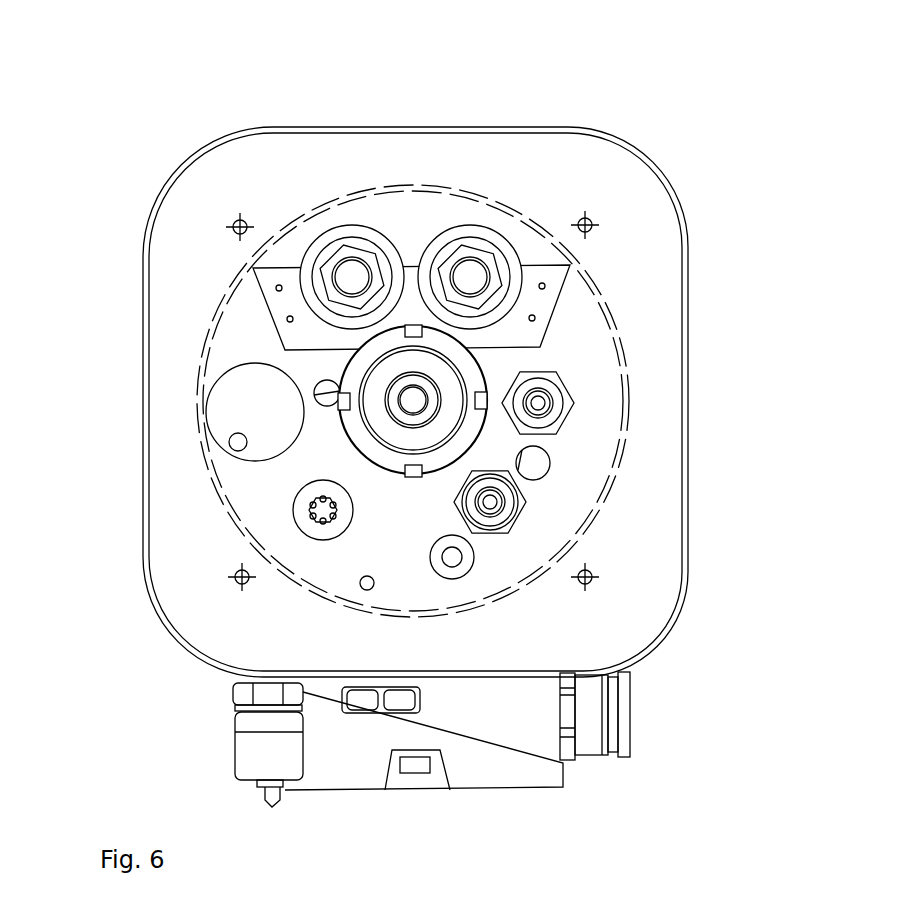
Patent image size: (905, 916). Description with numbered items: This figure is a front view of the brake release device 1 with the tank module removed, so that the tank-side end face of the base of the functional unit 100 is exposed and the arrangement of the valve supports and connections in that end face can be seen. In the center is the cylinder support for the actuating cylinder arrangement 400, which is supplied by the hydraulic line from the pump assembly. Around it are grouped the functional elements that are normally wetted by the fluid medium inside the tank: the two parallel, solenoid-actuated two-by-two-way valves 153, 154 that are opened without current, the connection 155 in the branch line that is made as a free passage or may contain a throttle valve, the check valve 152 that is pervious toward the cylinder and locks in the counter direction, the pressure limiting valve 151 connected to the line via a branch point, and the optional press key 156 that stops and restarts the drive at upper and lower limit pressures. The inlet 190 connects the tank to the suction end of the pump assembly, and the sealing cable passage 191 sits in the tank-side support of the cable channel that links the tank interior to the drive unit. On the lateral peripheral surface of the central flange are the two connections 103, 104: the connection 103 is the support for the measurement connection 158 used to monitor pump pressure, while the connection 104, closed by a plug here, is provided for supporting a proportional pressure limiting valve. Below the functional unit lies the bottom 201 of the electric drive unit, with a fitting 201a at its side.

The brake release device 1 is at (145, 133).
The functional unit 100 is at (147, 230).
The 2/2-way valve 154 is at (320, 237).
The 2/2-way valve 153 is at (443, 235).
The actuating cylinder arrangement 400 is at (502, 369).
The connection 155 is at (570, 397).
The press key 156 is at (220, 408).
The inlet 190 is at (547, 462).
The check valve 152 is at (297, 512).
The pressure limiting valve 151 is at (523, 512).
The sealing cable passage 191 is at (465, 568).
The measurement connection 158 is at (184, 745).
The connection 103 is at (245, 752).
The connection 104 is at (360, 705).
The bottom 201 is at (493, 777).
The connector 201a is at (623, 727).